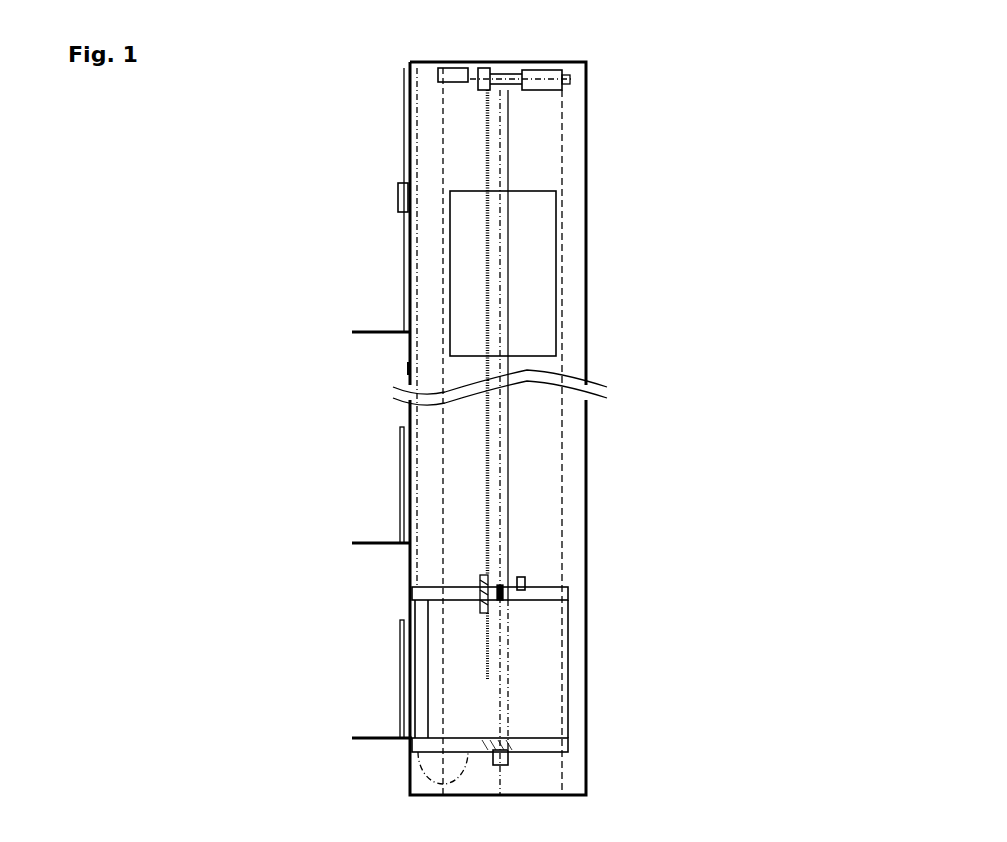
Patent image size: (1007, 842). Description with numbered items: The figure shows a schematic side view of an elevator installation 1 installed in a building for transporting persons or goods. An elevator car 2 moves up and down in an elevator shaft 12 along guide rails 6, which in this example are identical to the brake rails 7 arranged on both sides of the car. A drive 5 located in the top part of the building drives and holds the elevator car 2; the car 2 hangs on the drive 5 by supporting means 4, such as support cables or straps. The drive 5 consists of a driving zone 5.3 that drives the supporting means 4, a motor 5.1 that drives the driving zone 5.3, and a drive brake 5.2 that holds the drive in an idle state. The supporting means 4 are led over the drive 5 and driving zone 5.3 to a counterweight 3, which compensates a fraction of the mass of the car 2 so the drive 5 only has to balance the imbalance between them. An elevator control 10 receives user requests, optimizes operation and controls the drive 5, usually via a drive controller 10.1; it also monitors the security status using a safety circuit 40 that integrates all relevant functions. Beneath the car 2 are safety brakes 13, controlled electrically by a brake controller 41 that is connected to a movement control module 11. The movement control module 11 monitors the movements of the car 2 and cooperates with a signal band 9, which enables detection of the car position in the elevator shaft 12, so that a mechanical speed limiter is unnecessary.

The elevator installation 1 is at (264, 589).
The elevator car 2 is at (568, 668).
The counterweight 3 is at (522, 275).
The supporting means 4 is at (500, 482).
The drive 5 is at (651, 58).
The motor 5.1 is at (542, 87).
The drive brake 5.2 is at (492, 64).
The driving zone 5.3 is at (490, 73).
The guide rails 6 is at (565, 120).
The brake rails 7 is at (670, 173).
The signal band 9 is at (487, 653).
The elevator control 10 is at (398, 195).
The drive controller 10.1 is at (440, 63).
The movement control module 11 is at (497, 583).
The elevator shaft 12 is at (408, 285).
The safety brakes 13 is at (508, 758).
The safety circuit 40 is at (408, 368).
The brake controller 41 is at (527, 583).